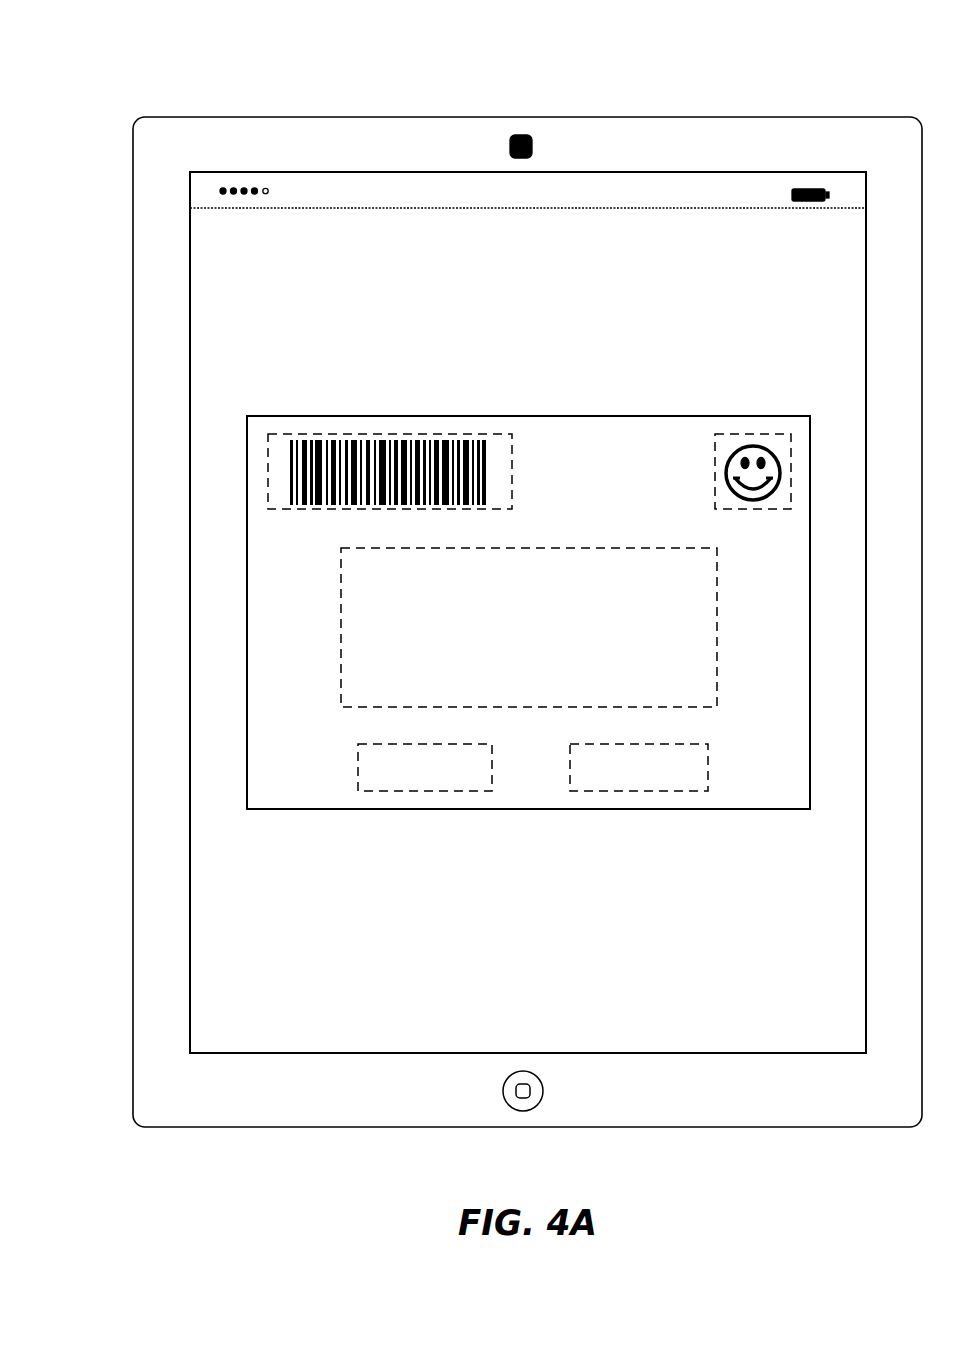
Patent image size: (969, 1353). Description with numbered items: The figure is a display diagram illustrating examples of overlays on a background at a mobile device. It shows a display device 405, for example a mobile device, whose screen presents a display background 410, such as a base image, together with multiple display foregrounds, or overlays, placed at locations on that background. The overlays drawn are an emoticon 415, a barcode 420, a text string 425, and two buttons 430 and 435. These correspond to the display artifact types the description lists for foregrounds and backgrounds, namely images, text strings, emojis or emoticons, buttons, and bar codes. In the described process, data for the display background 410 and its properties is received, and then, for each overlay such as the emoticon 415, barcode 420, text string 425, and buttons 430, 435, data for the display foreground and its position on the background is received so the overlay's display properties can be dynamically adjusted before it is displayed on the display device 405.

The display device 405 is at (195, 82).
The display background 410 is at (688, 416).
The emoticon 415 is at (793, 472).
The barcode 420 is at (268, 475).
The text string 425 is at (717, 592).
The button 430 is at (420, 791).
The button 435 is at (626, 791).